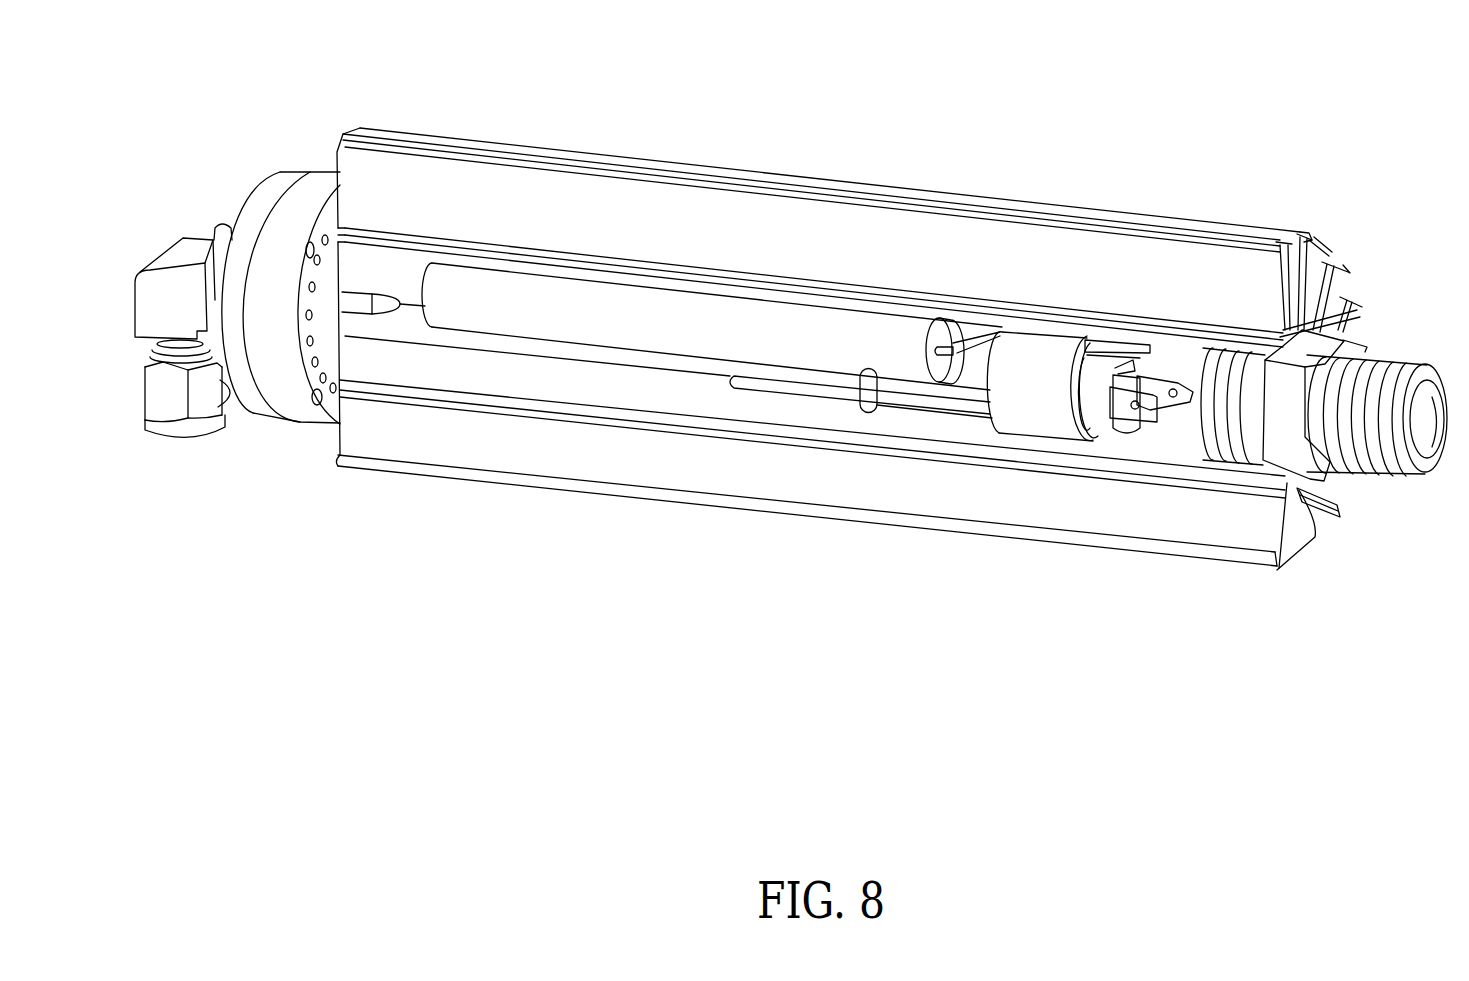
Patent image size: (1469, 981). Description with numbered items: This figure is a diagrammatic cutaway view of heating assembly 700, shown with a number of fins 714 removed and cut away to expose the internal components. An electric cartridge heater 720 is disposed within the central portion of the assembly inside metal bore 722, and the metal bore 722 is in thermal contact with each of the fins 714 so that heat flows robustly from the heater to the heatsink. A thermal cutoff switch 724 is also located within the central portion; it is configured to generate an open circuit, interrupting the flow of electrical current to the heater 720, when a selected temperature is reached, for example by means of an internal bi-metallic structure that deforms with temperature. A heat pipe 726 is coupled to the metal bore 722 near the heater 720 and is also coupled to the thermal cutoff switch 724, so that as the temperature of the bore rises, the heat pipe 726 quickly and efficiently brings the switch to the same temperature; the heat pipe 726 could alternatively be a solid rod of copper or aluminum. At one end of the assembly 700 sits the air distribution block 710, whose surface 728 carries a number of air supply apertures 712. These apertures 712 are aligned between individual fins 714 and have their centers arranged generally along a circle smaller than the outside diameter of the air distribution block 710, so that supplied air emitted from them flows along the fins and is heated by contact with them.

The heating assembly 700 is at (1166, 78).
The air distribution block 710 is at (278, 189).
The air supply apertures 712 is at (323, 237).
The fins 714 is at (1336, 262).
The electric cartridge heater 720 is at (515, 317).
The metal bore 722 is at (413, 323).
The thermal cutoff switch 724 is at (1041, 406).
The heat pipe 726 is at (808, 385).
The surface 728 is at (307, 272).